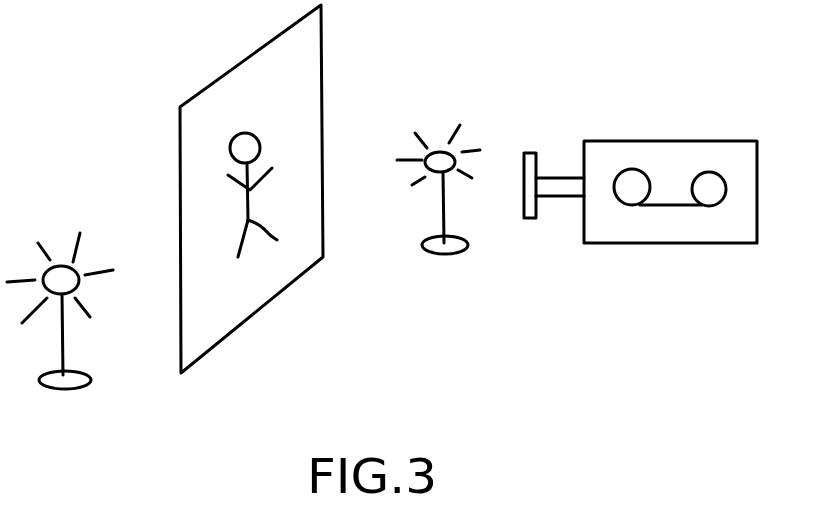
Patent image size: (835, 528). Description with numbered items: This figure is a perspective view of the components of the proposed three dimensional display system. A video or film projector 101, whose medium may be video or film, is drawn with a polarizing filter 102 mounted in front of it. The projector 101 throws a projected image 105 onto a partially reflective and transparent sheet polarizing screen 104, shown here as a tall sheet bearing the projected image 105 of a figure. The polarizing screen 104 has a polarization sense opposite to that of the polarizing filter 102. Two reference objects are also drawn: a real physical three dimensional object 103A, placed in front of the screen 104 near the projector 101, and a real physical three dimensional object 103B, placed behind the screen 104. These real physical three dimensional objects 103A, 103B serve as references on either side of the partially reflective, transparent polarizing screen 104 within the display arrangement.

The video or film projector 101 is at (638, 243).
The polarizing filter 102 is at (533, 150).
The real physical three dimensional object 103A is at (447, 219).
The real physical three dimensional object 103B is at (62, 353).
The partially reflective and transparent sheet polarizing screen 104 is at (197, 343).
The projected image 105 is at (252, 192).